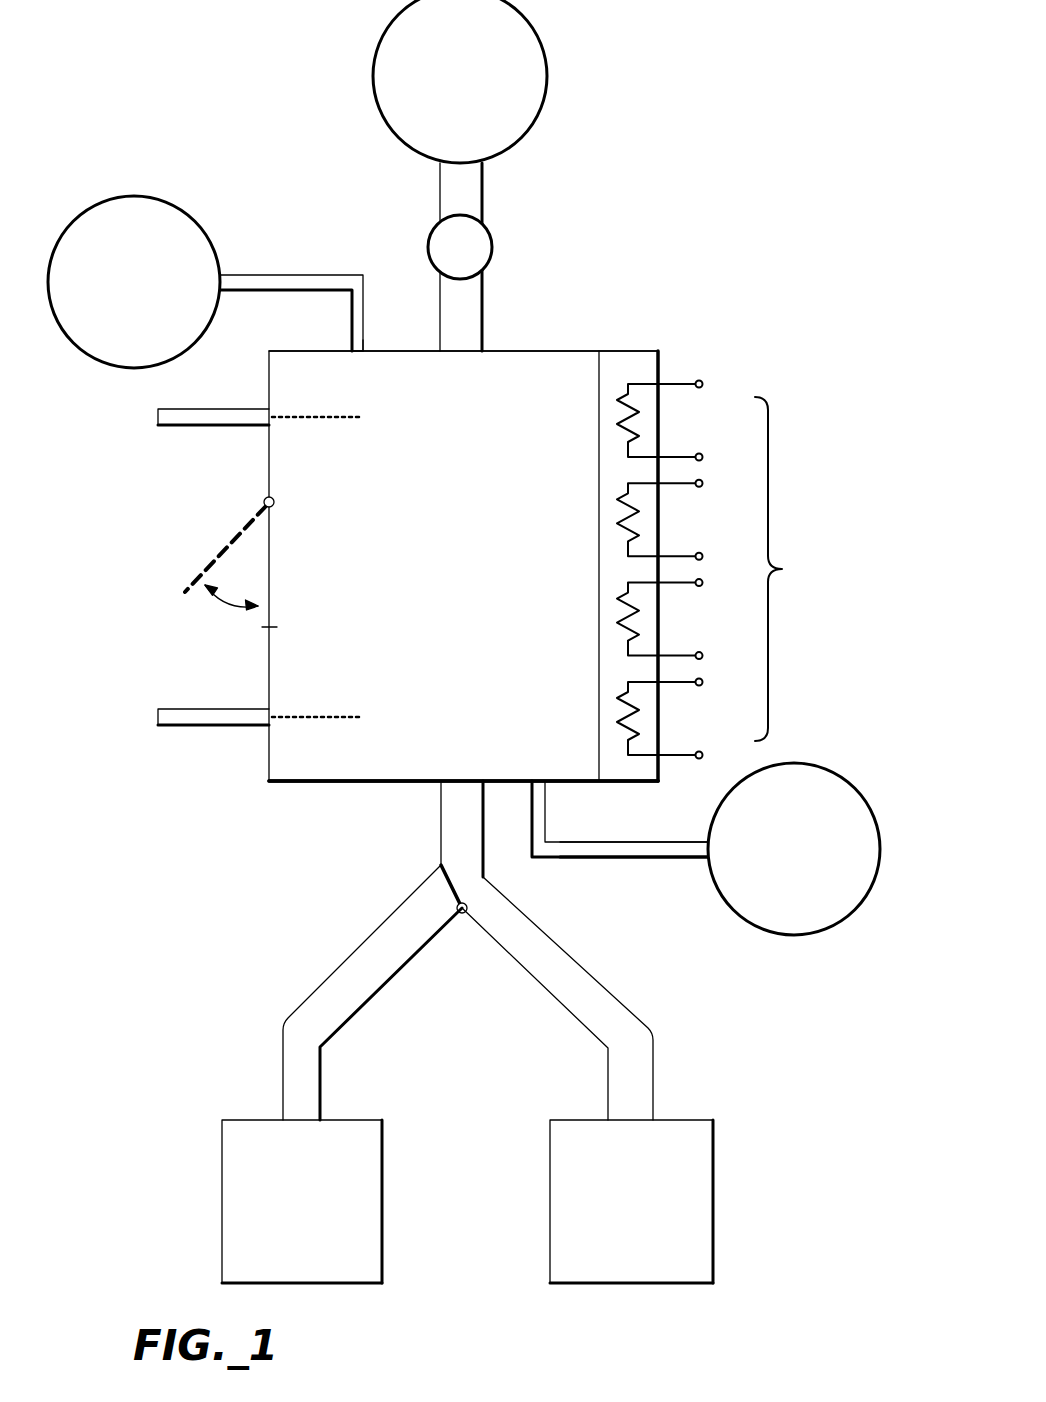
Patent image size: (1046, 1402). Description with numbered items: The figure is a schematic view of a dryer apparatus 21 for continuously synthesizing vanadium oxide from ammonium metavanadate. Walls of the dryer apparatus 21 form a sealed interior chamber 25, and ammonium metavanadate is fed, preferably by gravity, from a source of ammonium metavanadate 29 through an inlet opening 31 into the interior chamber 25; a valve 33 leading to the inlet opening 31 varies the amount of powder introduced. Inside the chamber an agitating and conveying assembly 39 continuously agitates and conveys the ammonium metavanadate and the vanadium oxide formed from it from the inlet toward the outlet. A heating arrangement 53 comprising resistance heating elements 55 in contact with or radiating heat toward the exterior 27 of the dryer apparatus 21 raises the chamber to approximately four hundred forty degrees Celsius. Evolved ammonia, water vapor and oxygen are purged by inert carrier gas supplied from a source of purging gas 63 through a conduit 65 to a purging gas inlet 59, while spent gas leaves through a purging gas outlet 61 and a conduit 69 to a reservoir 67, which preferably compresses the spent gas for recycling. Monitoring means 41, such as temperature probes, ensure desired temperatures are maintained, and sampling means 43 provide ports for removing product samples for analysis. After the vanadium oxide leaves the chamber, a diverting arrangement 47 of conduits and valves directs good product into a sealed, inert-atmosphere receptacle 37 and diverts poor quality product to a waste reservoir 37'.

The dryer apparatus 21 is at (783, 486).
The interior chamber 25 is at (438, 469).
The exterior 27 is at (332, 783).
The source of ammonium metavanadate 29 is at (520, 118).
The inlet opening 31 is at (440, 347).
The valve 33 is at (494, 241).
The receptacle 37 is at (587, 1080).
The waste reservoir 37' is at (297, 1074).
The agitating and conveying assembly 39 is at (518, 349).
The monitoring means 41 is at (208, 417).
The sampling means 43 is at (207, 558).
The diverting arrangement 47 is at (463, 922).
The heating arrangement 53 is at (783, 569).
The resistance heating elements 55 is at (672, 457).
The purging gas inlet 59 is at (347, 348).
The purging gas outlet 61 is at (548, 784).
The source of purging gas 63 is at (178, 222).
The conduit 65 is at (266, 280).
The reservoir 67 is at (788, 938).
The conduit 69 is at (560, 858).